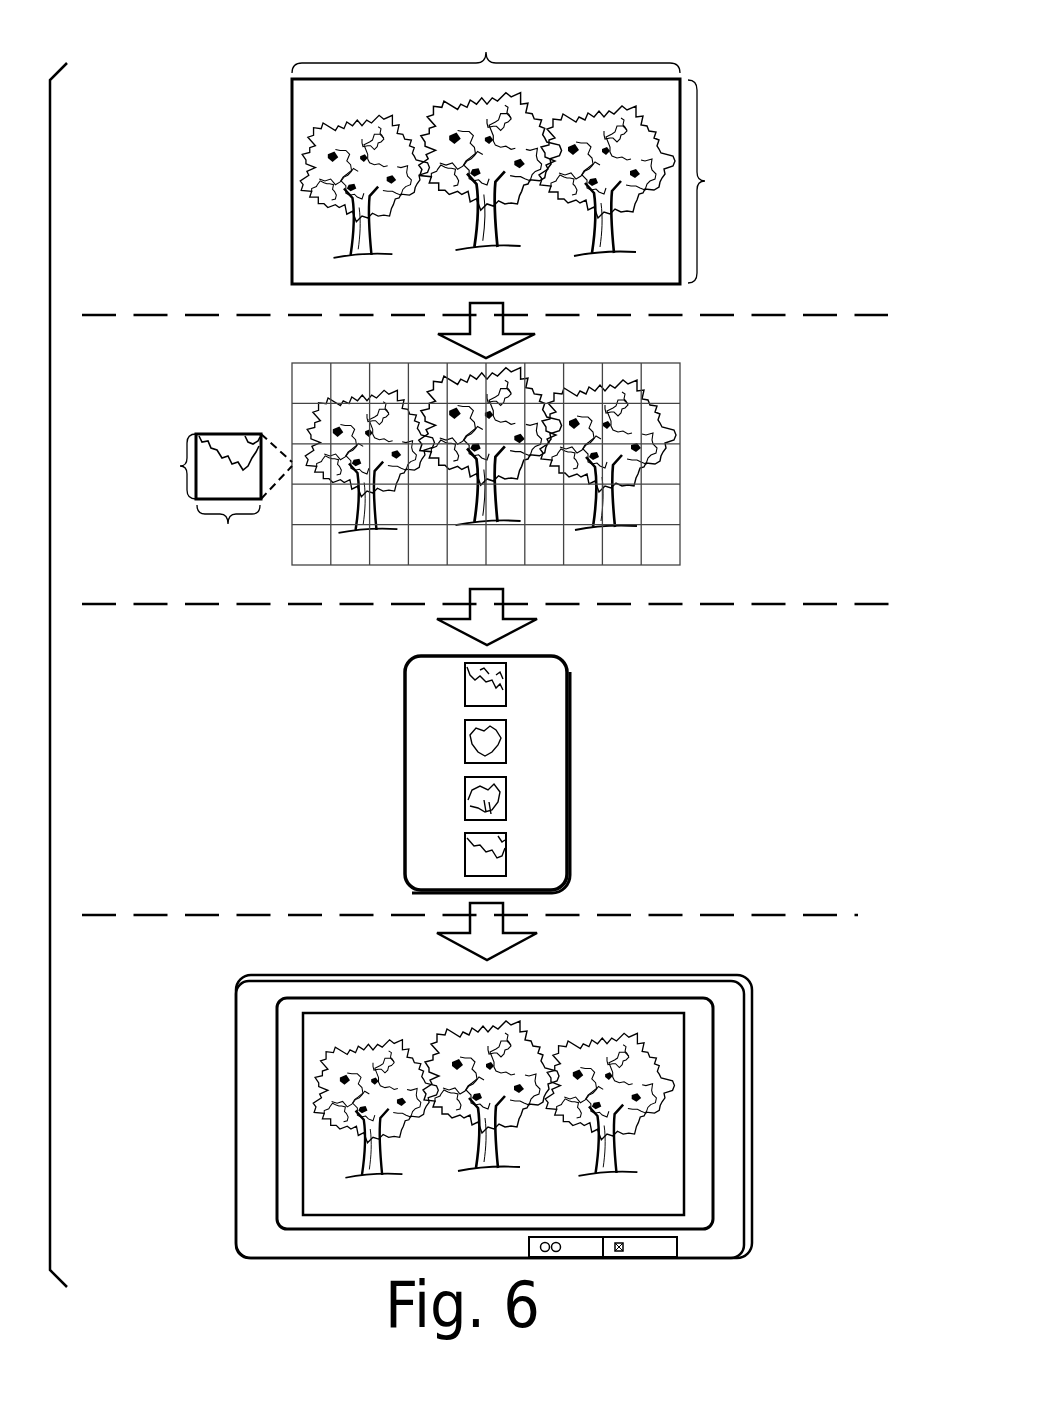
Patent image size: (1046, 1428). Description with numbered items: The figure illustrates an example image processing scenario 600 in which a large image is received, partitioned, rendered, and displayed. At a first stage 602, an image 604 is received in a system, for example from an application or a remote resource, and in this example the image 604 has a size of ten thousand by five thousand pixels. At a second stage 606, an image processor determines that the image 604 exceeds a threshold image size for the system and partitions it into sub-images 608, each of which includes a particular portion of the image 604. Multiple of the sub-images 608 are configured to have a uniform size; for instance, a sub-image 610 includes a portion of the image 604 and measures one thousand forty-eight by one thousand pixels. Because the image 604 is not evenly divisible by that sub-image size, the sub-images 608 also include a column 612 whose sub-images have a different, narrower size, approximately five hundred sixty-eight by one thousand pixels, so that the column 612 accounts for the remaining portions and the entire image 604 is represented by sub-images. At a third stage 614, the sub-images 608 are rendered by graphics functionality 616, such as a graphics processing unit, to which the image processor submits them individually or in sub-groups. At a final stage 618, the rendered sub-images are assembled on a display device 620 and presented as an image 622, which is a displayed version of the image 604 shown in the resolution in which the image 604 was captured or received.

The image processing scenario 600 is at (114, 42).
The image receiving stage 602 is at (485, 293).
The image 604 is at (292, 182).
The image partitioning stage 606 is at (486, 571).
The sub-images 608 is at (481, 442).
The sub-image 610 is at (228, 434).
The column 612 is at (665, 363).
The rendering stage 614 is at (487, 876).
The graphics functionality 616 is at (404, 766).
The display stage 618 is at (492, 1120).
The display device 620 is at (456, 1116).
The displayed image 622 is at (493, 1114).